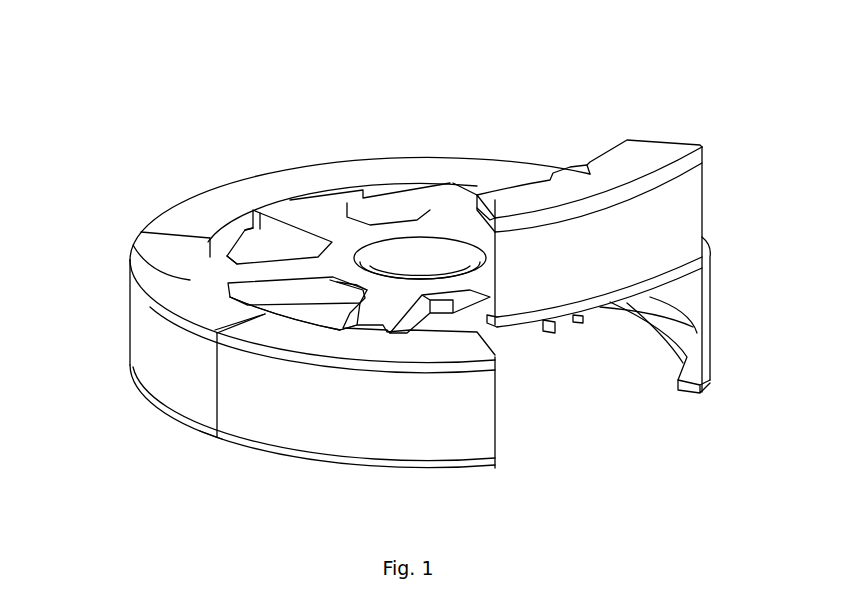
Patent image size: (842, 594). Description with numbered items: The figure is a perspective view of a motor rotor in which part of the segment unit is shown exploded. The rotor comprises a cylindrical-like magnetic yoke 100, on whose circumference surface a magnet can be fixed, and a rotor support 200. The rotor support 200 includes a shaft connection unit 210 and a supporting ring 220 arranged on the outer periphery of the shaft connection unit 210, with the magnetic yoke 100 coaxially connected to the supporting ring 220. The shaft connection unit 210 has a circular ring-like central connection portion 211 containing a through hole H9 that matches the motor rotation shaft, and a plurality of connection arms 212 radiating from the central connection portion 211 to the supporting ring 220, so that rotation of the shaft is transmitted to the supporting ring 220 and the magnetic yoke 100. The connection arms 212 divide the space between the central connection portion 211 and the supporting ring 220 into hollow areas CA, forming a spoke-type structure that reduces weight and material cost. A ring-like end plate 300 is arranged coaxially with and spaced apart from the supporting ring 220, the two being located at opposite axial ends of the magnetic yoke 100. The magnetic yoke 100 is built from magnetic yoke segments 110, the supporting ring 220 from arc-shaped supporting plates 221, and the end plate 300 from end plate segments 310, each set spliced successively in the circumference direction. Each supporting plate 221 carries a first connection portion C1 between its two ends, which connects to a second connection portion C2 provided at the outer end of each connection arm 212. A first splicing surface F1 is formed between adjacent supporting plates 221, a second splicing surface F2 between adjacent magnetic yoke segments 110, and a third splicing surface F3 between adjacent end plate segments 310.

The magnetic yoke 100 is at (158, 352).
The magnetic yoke segment 110 is at (663, 237).
The rotor support 200 is at (240, 50).
The shaft connection unit 210 is at (382, 192).
The central connection portion 211 is at (418, 230).
The connection arm 212 is at (326, 222).
The supporting ring 220 is at (268, 187).
The supporting plate 221 is at (663, 153).
The end plate 300 is at (150, 402).
The end plate segment 310 is at (672, 283).
The through hole H9 is at (423, 270).
The first connection portion C1 is at (233, 280).
The second connection portion C2 is at (233, 248).
The hollow area CA is at (253, 247).
The first splicing surface F1 is at (247, 320).
The second splicing surface F2 is at (217, 392).
The third splicing surface F3 is at (205, 432).